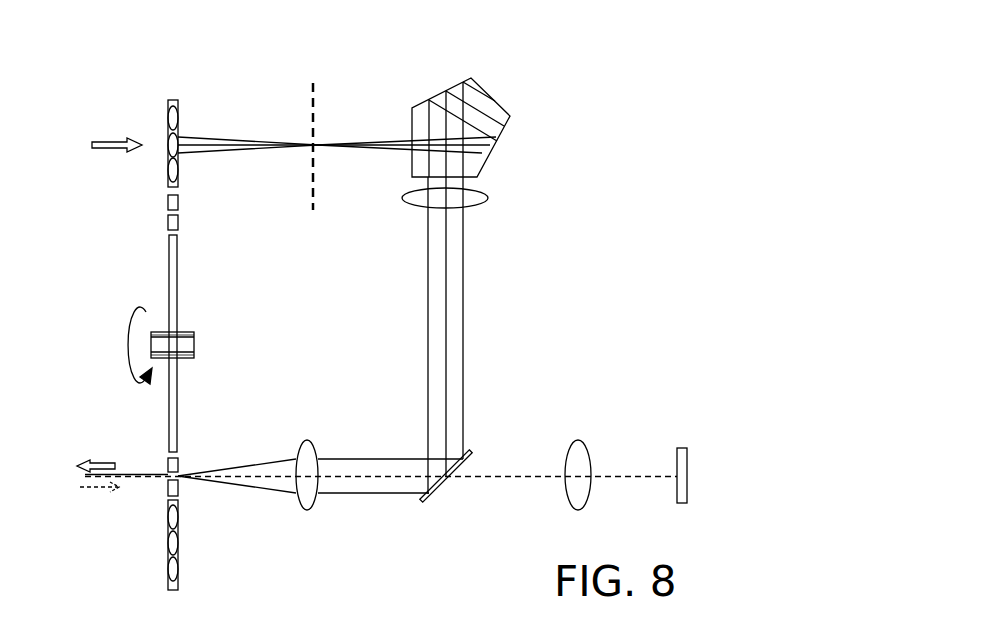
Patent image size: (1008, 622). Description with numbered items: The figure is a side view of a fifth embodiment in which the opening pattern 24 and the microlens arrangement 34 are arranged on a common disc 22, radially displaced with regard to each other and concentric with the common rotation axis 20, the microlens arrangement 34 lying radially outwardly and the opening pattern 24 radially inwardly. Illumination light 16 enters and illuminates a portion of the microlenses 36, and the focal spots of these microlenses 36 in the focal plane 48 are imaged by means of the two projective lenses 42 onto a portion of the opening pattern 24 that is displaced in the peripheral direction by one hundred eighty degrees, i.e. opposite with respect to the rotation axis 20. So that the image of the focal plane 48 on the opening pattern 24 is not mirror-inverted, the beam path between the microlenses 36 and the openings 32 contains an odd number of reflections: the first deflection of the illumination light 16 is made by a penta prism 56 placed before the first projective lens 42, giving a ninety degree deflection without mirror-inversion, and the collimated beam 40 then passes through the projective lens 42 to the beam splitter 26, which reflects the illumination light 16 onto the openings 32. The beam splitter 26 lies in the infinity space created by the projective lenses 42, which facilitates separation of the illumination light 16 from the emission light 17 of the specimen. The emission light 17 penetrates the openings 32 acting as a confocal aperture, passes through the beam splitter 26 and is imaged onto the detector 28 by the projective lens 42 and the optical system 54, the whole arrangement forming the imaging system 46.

The illumination light 16 is at (270, 311).
The emission light 17 is at (82, 489).
The rotation axis 20 is at (186, 345).
The common disc 22 is at (160, 265).
The opening pattern 24 is at (190, 210).
The beam splitter 26 is at (443, 483).
The detector 28 is at (682, 455).
The openings 32 is at (167, 213).
The microlens arrangement 34 is at (158, 128).
The microlenses 36 is at (166, 120).
The collimated beam 40 is at (472, 270).
The projective lenses 42 is at (478, 193).
The optical system 46 is at (532, 327).
The focal plane 48 is at (311, 112).
The optical system 54 is at (580, 452).
The penta prism 56 is at (488, 93).